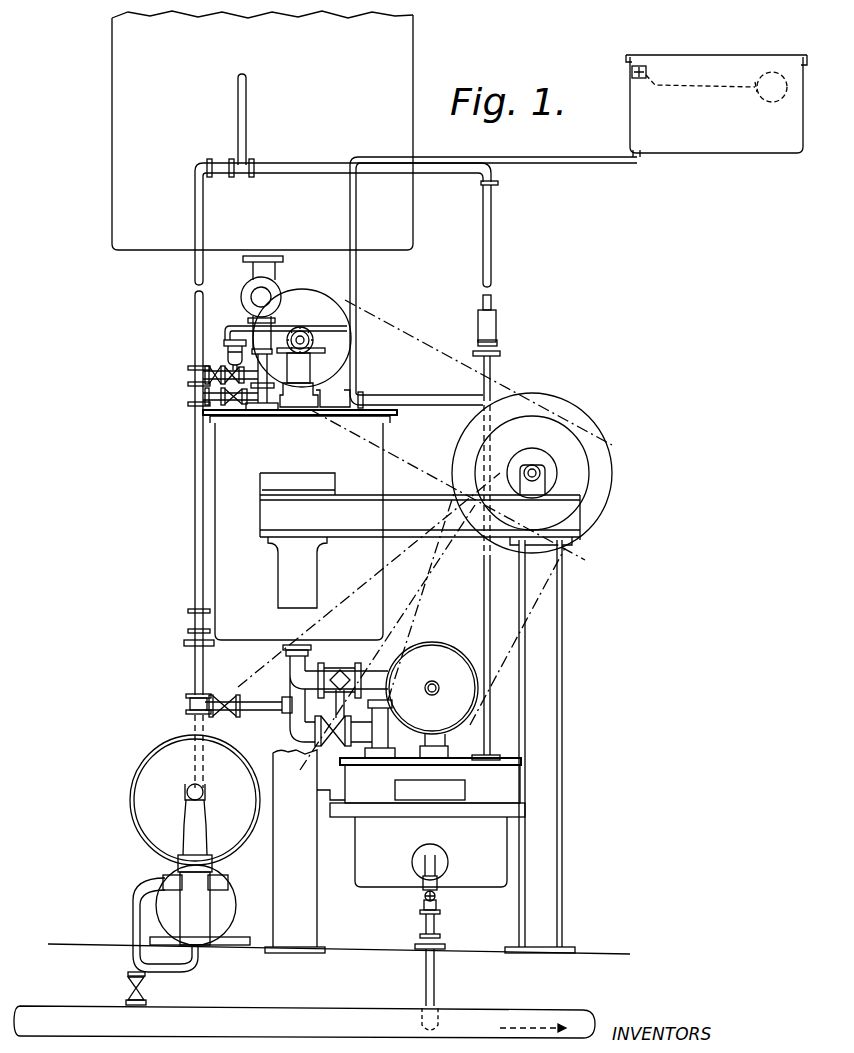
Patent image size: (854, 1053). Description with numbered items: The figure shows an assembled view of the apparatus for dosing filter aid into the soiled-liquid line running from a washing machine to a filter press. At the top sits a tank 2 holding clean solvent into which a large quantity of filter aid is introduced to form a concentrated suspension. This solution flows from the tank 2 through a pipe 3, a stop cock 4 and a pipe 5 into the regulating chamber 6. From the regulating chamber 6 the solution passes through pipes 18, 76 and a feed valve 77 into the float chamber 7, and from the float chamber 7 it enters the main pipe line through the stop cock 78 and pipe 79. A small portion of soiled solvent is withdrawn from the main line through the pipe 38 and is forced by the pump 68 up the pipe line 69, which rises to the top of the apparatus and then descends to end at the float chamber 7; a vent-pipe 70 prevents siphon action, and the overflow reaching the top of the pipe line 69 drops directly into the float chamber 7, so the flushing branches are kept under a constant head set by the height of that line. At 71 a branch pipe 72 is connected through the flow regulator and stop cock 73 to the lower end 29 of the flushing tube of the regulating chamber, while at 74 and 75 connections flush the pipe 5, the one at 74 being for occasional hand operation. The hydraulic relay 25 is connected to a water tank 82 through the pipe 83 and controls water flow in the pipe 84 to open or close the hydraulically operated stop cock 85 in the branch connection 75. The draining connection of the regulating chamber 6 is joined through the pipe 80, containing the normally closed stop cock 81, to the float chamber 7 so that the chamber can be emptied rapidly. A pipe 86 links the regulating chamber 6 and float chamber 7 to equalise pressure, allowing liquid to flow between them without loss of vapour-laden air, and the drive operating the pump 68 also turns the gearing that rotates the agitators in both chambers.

The tank 2 is at (262, 130).
The vent-pipe 70 is at (247, 113).
The pipe 83 is at (567, 164).
The water tank 82 is at (716, 104).
The pipe line 69 is at (492, 232).
The pipe 3 is at (277, 280).
The stop cock 4 is at (245, 294).
The pipe 84 is at (226, 328).
The hydraulically operated stop cock 85 is at (228, 352).
The branch connection 75 is at (205, 375).
The branch connection 74 is at (205, 396).
The pipe 5 is at (273, 357).
The hydraulic relay 25 is at (338, 398).
The pipe 86 is at (428, 398).
The regulating chamber 6 is at (300, 525).
The pipe 18 is at (332, 677).
The lower end of flushing tube 29 is at (288, 695).
The feed valve 77 is at (380, 662).
The pipe 76 is at (396, 680).
The branch connection 71 is at (190, 705).
The flow regulator and stop cock 73 is at (223, 713).
The branch pipe 72 is at (265, 711).
The pipe 80 is at (305, 740).
The stop cock 81 is at (338, 766).
The float chamber 7 is at (431, 853).
The stop cock 78 is at (441, 898).
The pipe 79 is at (434, 980).
The pump 68 is at (133, 884).
The pipe 38 is at (130, 975).